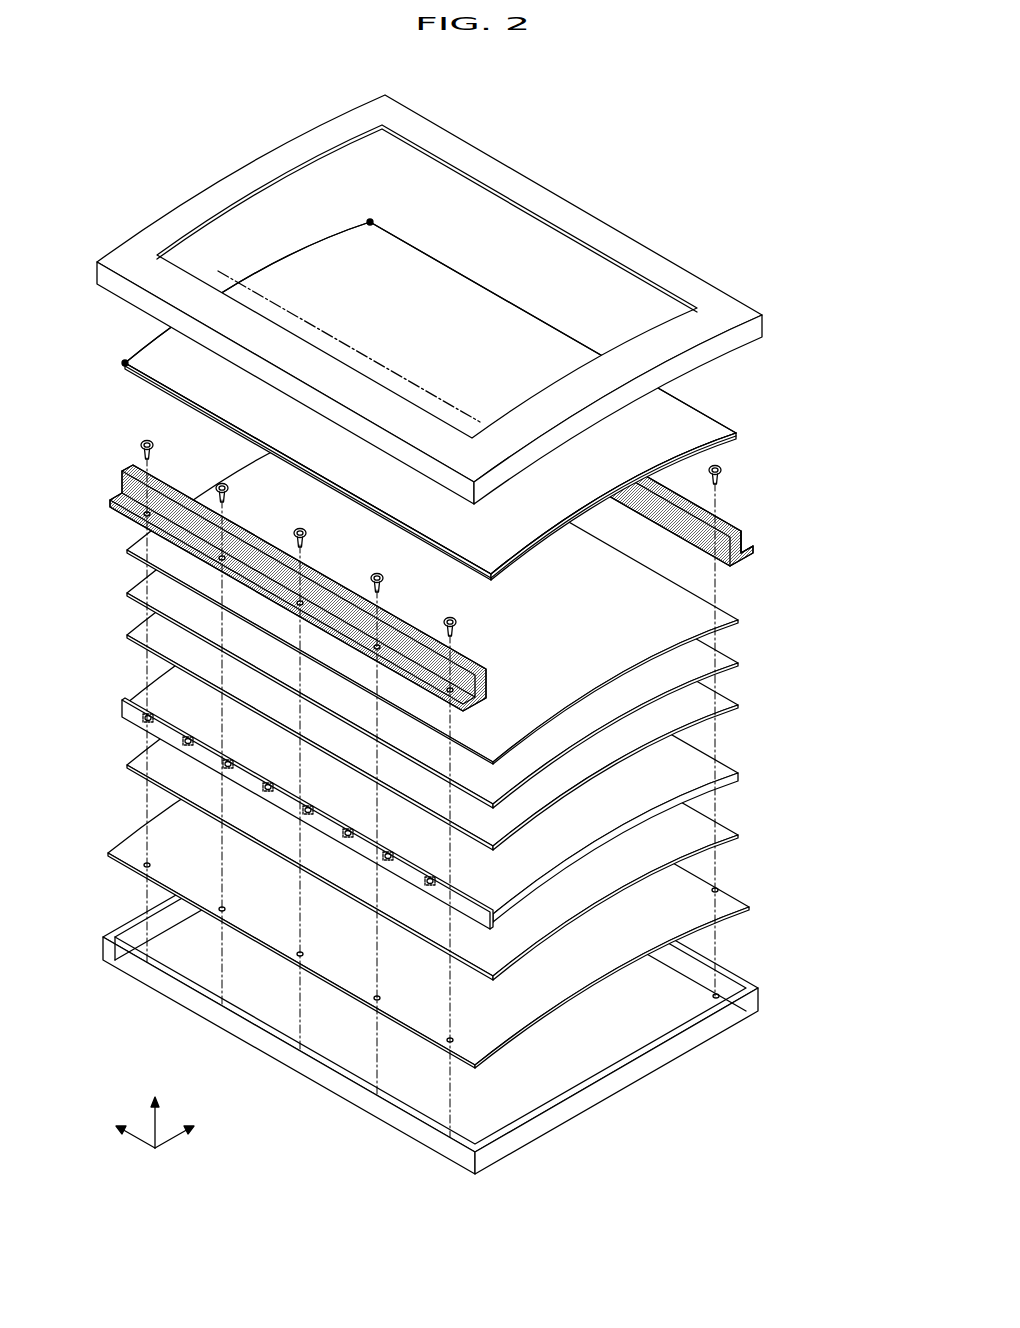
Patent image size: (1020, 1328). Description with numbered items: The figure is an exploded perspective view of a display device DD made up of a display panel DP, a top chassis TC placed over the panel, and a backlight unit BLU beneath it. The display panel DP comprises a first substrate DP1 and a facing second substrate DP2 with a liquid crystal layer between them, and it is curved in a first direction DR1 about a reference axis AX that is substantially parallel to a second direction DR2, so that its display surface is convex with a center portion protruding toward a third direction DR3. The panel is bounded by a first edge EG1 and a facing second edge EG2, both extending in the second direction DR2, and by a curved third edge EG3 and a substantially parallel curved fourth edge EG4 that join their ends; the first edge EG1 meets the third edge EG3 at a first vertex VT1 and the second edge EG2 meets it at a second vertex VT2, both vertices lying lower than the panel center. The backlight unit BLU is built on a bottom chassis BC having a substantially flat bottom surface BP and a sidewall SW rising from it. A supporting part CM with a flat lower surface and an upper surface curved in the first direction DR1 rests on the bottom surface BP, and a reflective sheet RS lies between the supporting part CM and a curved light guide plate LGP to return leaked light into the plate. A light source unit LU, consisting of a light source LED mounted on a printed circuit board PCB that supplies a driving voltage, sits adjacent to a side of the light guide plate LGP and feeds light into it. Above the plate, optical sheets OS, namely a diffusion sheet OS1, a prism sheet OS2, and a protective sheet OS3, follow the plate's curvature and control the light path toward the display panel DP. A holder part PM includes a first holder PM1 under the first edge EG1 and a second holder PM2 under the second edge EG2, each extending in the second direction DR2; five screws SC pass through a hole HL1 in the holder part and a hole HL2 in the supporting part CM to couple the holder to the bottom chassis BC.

The display device DD is at (476, 634).
The top chassis TC is at (568, 214).
The display panel DP is at (464, 375).
The first substrate DP1 is at (722, 444).
The second substrate DP2 is at (710, 412).
The first edge EG1 is at (307, 468).
The second edge EG2 is at (504, 299).
The third edge EG3 is at (266, 268).
The fourth edge EG4 is at (620, 488).
The first vertex VT1 is at (124, 360).
The second vertex VT2 is at (371, 219).
The reference axis AX is at (336, 339).
The screw SC is at (145, 438).
The holder part PM is at (273, 560).
The first holder PM1 is at (274, 560).
The second holder PM2 is at (610, 446).
The hole HL1 is at (145, 514).
The hole HL2 is at (144, 867).
The backlight unit BLU is at (476, 750).
The optical sheets OS is at (478, 629).
The diffusion sheet OS1 is at (708, 697).
The prism sheet OS2 is at (707, 656).
The protective sheet OS3 is at (790, 708).
The light guide plate LGP is at (700, 762).
The reflective sheet RS is at (698, 832).
The supporting part CM is at (447, 881).
The light source unit LU is at (276, 813).
The printed circuit board PCB is at (123, 708).
The light source LED is at (143, 722).
The bottom chassis BC is at (468, 974).
The sidewall SW is at (720, 1026).
The bottom surface BP is at (612, 1026).
The first direction DR1 is at (195, 1134).
The second direction DR2 is at (117, 1134).
The third direction DR3 is at (158, 1112).